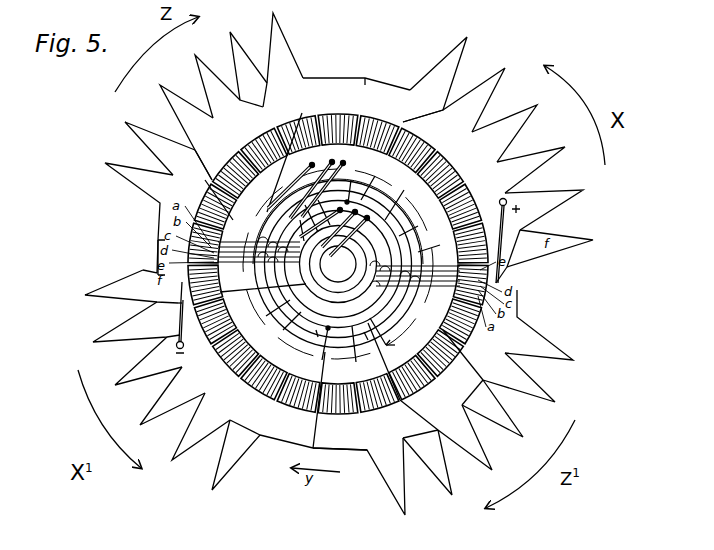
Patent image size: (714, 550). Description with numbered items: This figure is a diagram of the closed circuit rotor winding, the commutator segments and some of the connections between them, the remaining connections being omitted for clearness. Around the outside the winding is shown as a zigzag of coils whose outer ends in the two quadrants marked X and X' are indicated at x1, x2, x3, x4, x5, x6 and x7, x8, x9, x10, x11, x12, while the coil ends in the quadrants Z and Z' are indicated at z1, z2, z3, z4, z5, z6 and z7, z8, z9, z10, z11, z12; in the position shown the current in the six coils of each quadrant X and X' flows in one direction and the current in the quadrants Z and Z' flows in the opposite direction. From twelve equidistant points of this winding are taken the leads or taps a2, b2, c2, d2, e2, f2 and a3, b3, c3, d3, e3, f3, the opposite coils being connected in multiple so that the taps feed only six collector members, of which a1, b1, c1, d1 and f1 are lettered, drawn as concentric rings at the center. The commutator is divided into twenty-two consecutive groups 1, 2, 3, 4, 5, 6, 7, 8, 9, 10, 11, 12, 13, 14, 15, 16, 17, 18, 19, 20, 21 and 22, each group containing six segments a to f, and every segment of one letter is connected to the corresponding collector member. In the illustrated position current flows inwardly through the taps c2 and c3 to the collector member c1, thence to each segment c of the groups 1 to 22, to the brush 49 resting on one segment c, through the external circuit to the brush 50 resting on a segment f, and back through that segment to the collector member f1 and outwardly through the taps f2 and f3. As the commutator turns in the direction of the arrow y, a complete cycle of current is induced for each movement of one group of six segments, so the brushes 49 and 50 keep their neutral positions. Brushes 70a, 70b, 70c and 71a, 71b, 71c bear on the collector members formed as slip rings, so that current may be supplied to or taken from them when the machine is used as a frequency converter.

The commutator segment group 1 is at (458, 268).
The commutator segment group 2 is at (455, 245).
The commutator segment group 3 is at (452, 220).
The commutator segment group 4 is at (456, 170).
The commutator segment group 5 is at (420, 140).
The commutator segment group 6 is at (375, 128).
The commutator segment group 7 is at (348, 114).
The commutator segment group 8 is at (300, 118).
The commutator segment group 9 is at (258, 140).
The commutator segment group 10 is at (236, 160).
The commutator segment group 11 is at (206, 196).
The commutator segment group 12 is at (220, 221).
The commutator segment group 13 is at (218, 281).
The commutator segment group 14 is at (226, 306).
The commutator segment group 15 is at (225, 366).
The commutator segment group 16 is at (268, 400).
The commutator segment group 17 is at (300, 416).
The commutator segment group 18 is at (343, 418).
The commutator segment group 19 is at (382, 414).
The commutator segment group 20 is at (420, 396).
The commutator segment group 21 is at (443, 360).
The commutator segment group 22 is at (498, 336).
The brush 49 is at (515, 257).
The brush 50 is at (157, 300).
The brush 70a is at (290, 188).
The brush 70b is at (312, 180).
The brush 70c is at (341, 183).
The brush 71a is at (313, 226).
The brush 71b is at (337, 224).
The brush 71c is at (375, 205).
The collector member f1 is at (338, 264).
The collector member a1 is at (397, 358).
The collector member b1 is at (397, 344).
The collector member c1 is at (324, 344).
The collector member d1 is at (369, 342).
The lead or tap a2 is at (203, 155).
The lead or tap b2 is at (265, 95).
The lead or tap c2 is at (375, 86).
The lead or tap d2 is at (423, 111).
The lead or tap e2 is at (507, 226).
The lead or tap f2 is at (520, 278).
The lead or tap a3 is at (481, 382).
The lead or tap b3 is at (420, 437).
The lead or tap c3 is at (340, 460).
The lead or tap d3 is at (231, 420).
The lead or tap e3 is at (176, 335).
The lead or tap f3 is at (150, 248).
The coil end x1 is at (556, 248).
The coil end x2 is at (552, 210).
The coil end x3 is at (539, 170).
The coil end x4 is at (515, 132).
The coil end x5 is at (503, 72).
The coil end x6 is at (447, 70).
The coil end x7 is at (117, 286).
The coil end x8 is at (122, 324).
The coil end x9 is at (136, 361).
The coil end x10 is at (158, 396).
The coil end x11 is at (186, 426).
The coil end x12 is at (219, 455).
The coil end z1 is at (410, 514).
The coil end z2 is at (439, 466).
The coil end z3 is at (457, 436).
The coil end z4 is at (505, 408).
The coil end z5 is at (529, 377).
The coil end z6 is at (550, 325).
The coil end z7 is at (285, 41).
The coil end z8 is at (248, 60).
The coil end z9 is at (217, 76).
The coil end z10 is at (186, 122).
The coil end z11 is at (160, 137).
The coil end z12 is at (139, 207).